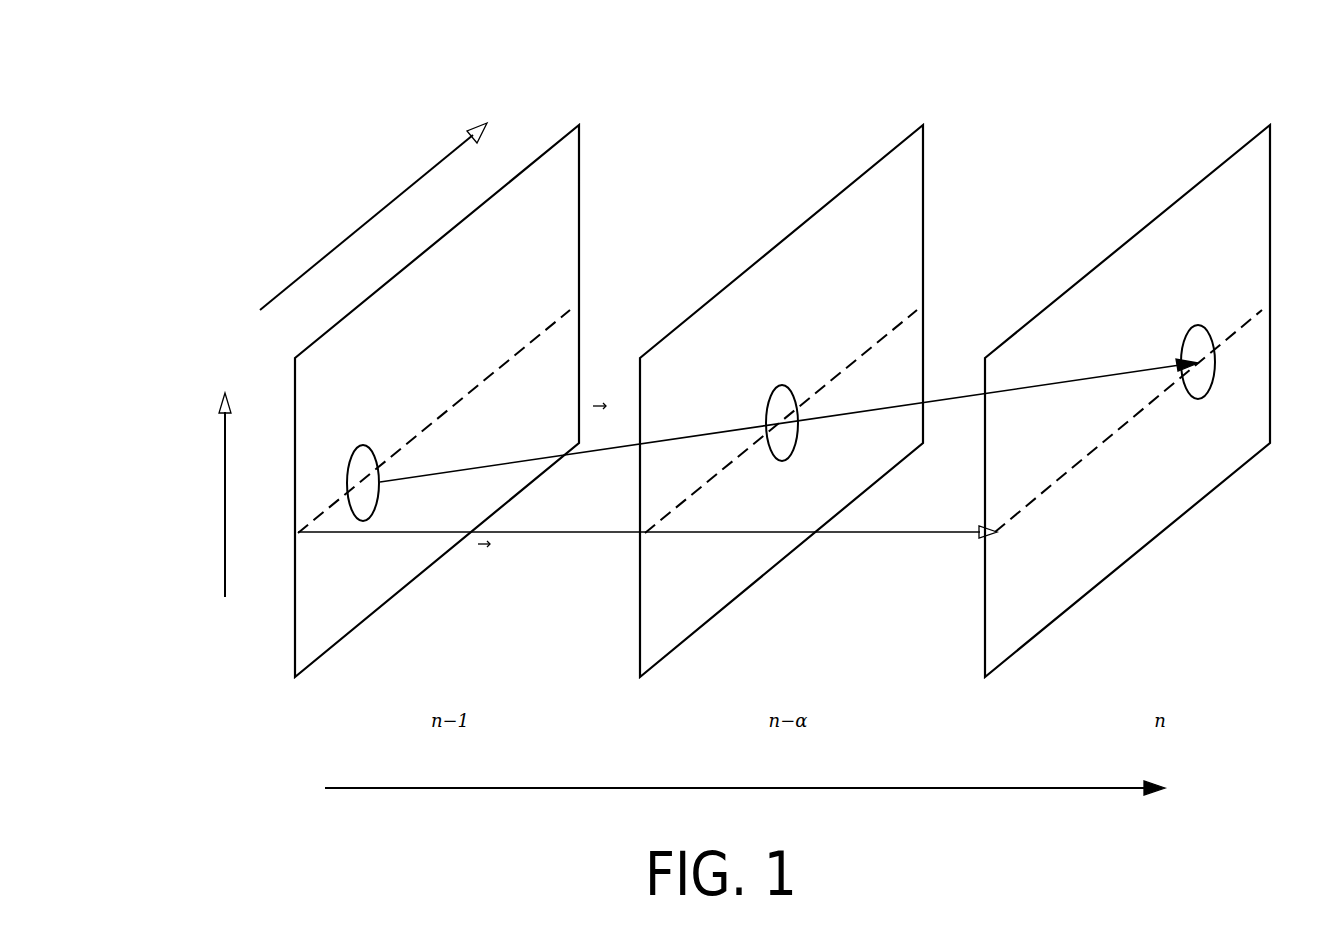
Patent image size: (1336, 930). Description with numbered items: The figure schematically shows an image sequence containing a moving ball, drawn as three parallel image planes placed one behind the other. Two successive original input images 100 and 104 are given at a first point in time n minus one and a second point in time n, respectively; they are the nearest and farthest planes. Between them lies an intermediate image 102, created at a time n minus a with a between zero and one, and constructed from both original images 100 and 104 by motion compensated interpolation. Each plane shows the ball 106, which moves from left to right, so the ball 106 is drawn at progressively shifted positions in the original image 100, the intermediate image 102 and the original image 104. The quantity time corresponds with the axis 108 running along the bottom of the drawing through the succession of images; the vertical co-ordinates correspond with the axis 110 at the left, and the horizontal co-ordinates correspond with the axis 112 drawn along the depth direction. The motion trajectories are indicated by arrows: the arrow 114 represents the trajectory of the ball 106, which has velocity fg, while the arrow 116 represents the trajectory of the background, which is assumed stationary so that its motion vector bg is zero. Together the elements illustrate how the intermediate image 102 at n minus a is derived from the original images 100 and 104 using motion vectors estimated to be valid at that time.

The original image 100 is at (570, 180).
The intermediate image 102 is at (920, 185).
The original image 104 is at (1258, 167).
The ball 106 is at (365, 447).
The axis 108 is at (993, 788).
The axis 110 is at (223, 482).
The axis 112 is at (322, 257).
The arrow 114 is at (622, 448).
The arrow 116 is at (592, 534).